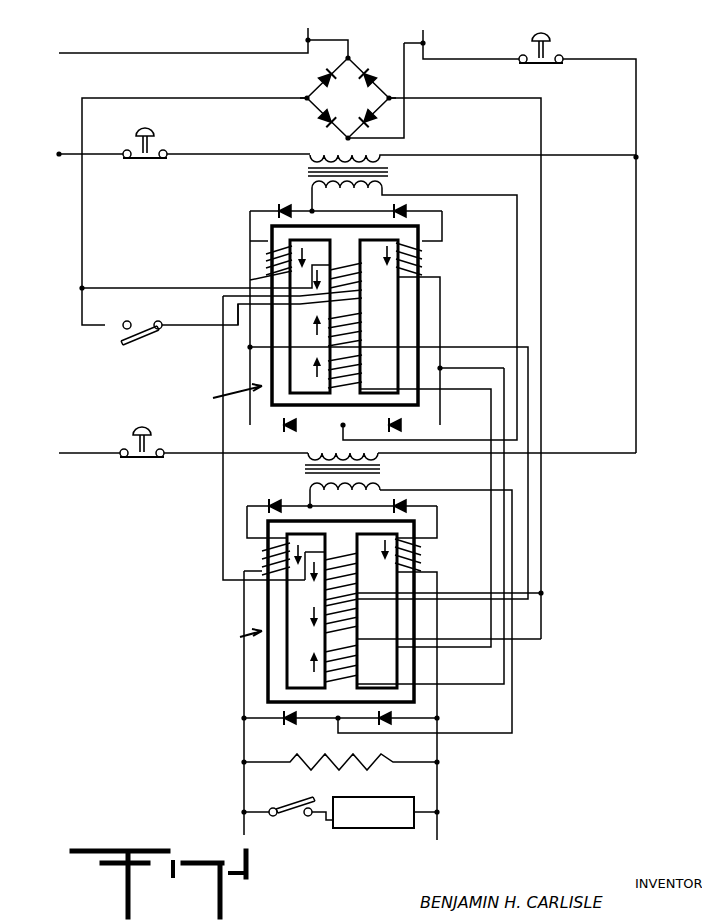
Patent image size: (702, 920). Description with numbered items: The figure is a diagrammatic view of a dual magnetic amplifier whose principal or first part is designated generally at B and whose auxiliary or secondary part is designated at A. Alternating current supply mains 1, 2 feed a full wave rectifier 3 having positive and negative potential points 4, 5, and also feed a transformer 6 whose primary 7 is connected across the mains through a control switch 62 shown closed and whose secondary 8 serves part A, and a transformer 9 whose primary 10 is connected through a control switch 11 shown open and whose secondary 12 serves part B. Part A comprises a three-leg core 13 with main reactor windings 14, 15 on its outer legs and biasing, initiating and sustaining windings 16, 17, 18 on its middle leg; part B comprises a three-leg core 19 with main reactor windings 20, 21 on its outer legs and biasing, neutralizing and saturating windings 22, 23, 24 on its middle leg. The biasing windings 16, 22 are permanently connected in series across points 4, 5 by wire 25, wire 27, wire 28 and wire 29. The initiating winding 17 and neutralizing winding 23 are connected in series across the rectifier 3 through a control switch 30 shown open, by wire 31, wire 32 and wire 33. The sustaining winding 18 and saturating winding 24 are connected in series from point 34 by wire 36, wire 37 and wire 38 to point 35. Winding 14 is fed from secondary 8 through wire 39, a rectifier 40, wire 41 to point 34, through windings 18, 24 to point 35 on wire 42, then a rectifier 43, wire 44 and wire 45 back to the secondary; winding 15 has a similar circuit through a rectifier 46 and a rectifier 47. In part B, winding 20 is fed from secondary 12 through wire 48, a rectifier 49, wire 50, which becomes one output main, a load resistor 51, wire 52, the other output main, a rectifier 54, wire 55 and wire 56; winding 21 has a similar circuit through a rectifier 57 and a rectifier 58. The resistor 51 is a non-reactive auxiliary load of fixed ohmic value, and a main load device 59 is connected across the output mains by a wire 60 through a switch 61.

The alternating current supply main 1 is at (308, 40).
The alternating current supply main 2 is at (423, 43).
The full wave rectifier 3 is at (354, 104).
The positive potential point 4 is at (300, 101).
The negative potential point 5 is at (396, 99).
The transformer 6 is at (388, 174).
The primary 7 is at (370, 146).
The secondary 8 is at (312, 188).
The transformer 9 is at (380, 471).
The primary 10 is at (330, 445).
The control switch 11 is at (142, 458).
The secondary 12 is at (310, 490).
The three-leg core 13 is at (338, 242).
The main reactor winding 14 is at (266, 262).
The main reactor winding 15 is at (425, 262).
The biasing winding 16 is at (370, 276).
The initiating winding 17 is at (364, 333).
The sustaining winding 18 is at (364, 374).
The three-leg core 19 is at (350, 537).
The main reactor winding 20 is at (263, 557).
The main reactor winding 21 is at (423, 556).
The biasing winding 22 is at (360, 578).
The neutralizing winding 23 is at (360, 620).
The saturating winding 24 is at (360, 667).
The wire 25 is at (120, 96).
The wire 27 is at (222, 372).
The wire 28 is at (218, 286).
The wire 29 is at (452, 98).
The control switch 30 is at (140, 324).
The wire 31 is at (183, 322).
The wire 32 is at (450, 347).
The wire 33 is at (445, 639).
The point 34 is at (245, 352).
The point 35 is at (445, 370).
The wire 36 is at (283, 347).
The wire 37 is at (455, 389).
The wire 38 is at (504, 405).
The wire 39 is at (335, 211).
The rectifier 40 is at (283, 205).
The wire 41 is at (238, 330).
The wire 42 is at (440, 300).
The rectifier 43 is at (399, 422).
The wire 44 is at (345, 422).
The wire 45 is at (415, 195).
The rectifier 46 is at (294, 422).
The rectifier 47 is at (404, 208).
The wire 48 is at (333, 506).
The rectifier 49 is at (273, 500).
The wire 50 is at (244, 672).
The load resistor 51 is at (302, 744).
The wire 52 is at (437, 570).
The rectifier 54 is at (389, 715).
The wire 55 is at (340, 715).
The wire 56 is at (438, 490).
The rectifier 57 is at (294, 715).
The rectifier 58 is at (404, 504).
The main load device 59 is at (382, 821).
The wire 60 is at (326, 820).
The switch 61 is at (290, 797).
The control switch 62 is at (155, 147).
The auxiliary part A is at (228, 395).
The principal part B is at (241, 636).